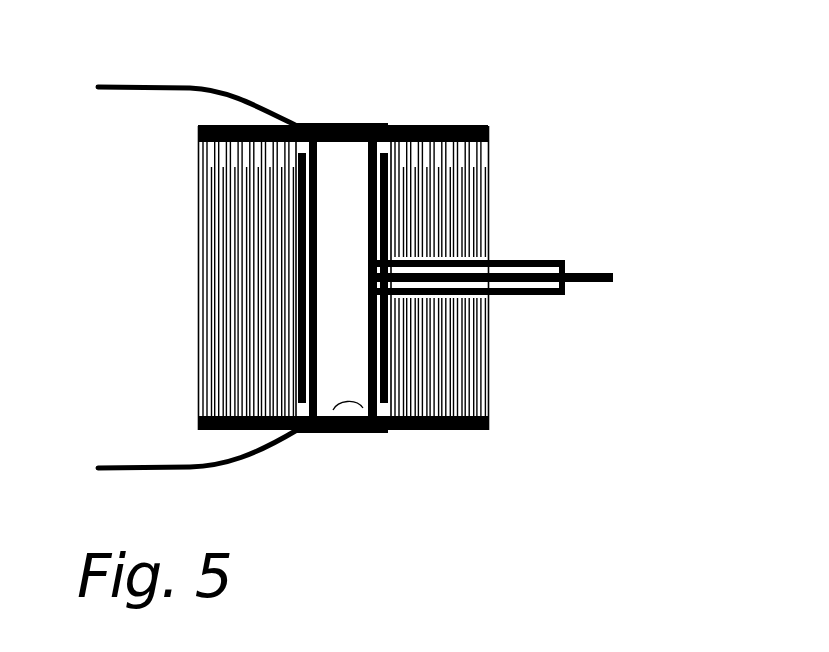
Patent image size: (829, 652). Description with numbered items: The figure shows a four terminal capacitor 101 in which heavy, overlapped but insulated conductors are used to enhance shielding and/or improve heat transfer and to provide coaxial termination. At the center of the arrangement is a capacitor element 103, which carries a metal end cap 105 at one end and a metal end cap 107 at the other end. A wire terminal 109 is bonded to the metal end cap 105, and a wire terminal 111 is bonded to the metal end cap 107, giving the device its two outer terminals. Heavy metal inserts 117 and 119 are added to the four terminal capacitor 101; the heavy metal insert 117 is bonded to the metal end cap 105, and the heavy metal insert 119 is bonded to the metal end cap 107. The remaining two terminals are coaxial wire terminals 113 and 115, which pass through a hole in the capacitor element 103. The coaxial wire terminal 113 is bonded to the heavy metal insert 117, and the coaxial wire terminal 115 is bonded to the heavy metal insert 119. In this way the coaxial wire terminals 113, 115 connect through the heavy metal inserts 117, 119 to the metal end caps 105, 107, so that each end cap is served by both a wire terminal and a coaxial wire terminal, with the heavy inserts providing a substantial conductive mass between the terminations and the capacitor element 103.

The four terminal capacitor 101 is at (220, 38).
The capacitor element 103 is at (497, 178).
The metal end cap 105 is at (493, 123).
The metal end cap 107 is at (457, 437).
The wire terminal 109 is at (137, 102).
The wire terminal 111 is at (133, 450).
The coaxial wire terminal 113 is at (552, 248).
The coaxial wire terminal 115 is at (552, 308).
The heavy metal insert 117 is at (360, 433).
The heavy metal insert 119 is at (361, 159).